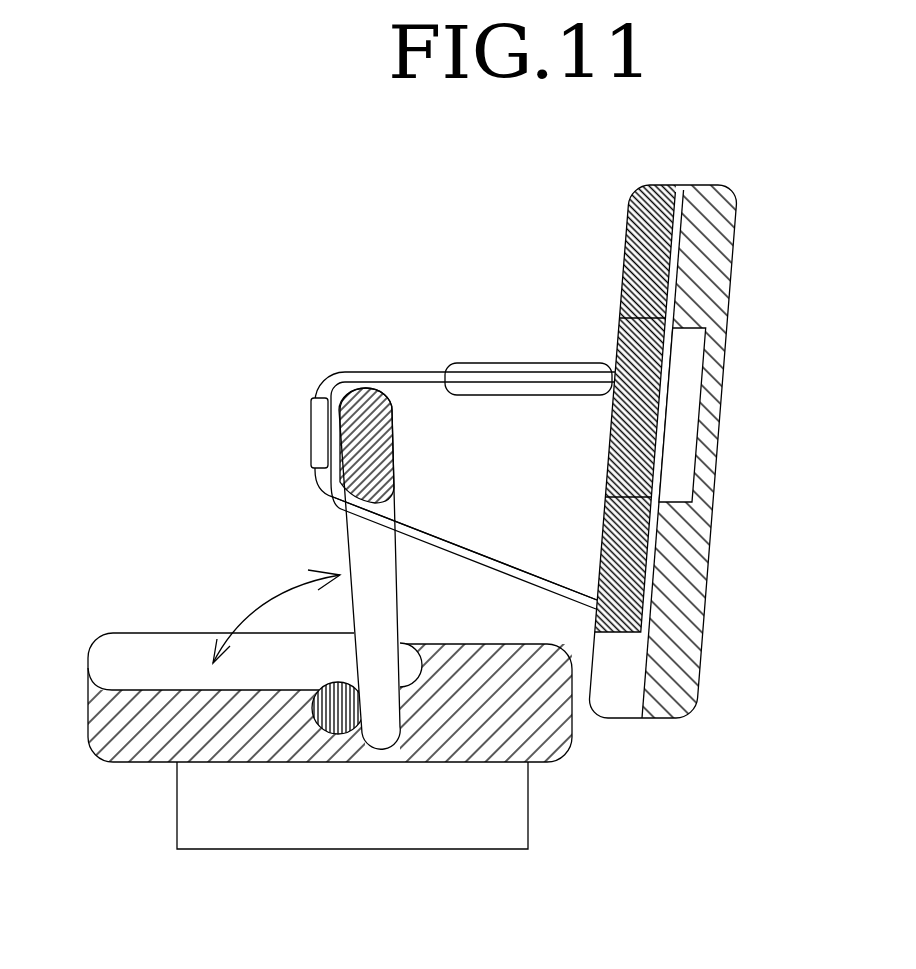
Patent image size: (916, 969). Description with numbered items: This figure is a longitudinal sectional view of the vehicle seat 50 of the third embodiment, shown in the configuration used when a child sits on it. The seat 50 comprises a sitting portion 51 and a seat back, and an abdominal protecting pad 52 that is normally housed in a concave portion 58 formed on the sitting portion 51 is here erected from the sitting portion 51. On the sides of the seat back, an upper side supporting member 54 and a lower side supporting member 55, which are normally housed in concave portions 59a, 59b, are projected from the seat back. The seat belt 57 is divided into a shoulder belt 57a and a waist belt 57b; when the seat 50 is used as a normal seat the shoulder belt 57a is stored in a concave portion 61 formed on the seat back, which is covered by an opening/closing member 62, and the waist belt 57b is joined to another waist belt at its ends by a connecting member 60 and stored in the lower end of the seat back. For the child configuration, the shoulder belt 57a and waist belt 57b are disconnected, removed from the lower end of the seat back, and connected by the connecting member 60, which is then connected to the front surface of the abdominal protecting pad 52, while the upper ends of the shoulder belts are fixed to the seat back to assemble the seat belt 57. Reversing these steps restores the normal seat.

The vehicle seat 50 is at (290, 320).
The sitting portion 51 is at (450, 645).
The abdominal protecting pad 52 is at (357, 423).
The upper side supporting member 54 is at (630, 233).
The lower side supporting member 55 is at (642, 614).
The seat belt 57 is at (465, 421).
The shoulder belt 57a is at (533, 368).
The waist belt 57b is at (447, 543).
The concave portion 58 is at (157, 670).
The concave portion 59a is at (680, 240).
The concave portion 59b is at (647, 558).
The connecting member 60 is at (317, 438).
The concave portion 61 is at (683, 385).
The opening/closing member 62 is at (637, 450).